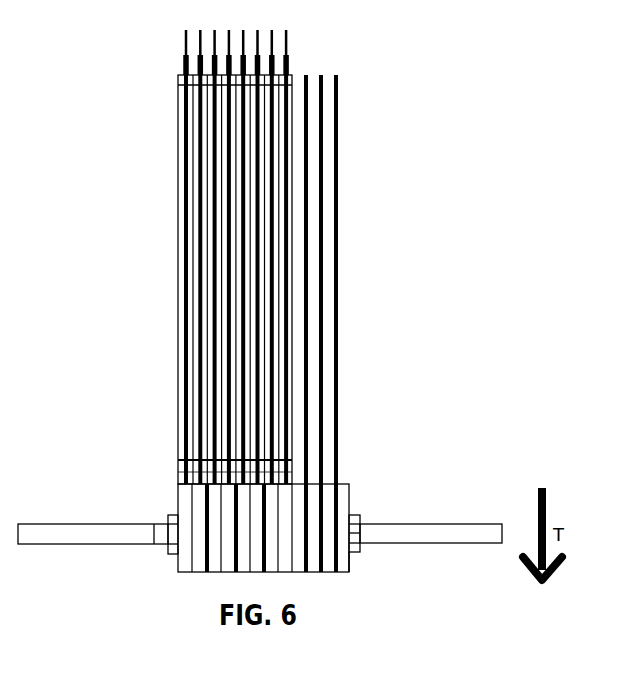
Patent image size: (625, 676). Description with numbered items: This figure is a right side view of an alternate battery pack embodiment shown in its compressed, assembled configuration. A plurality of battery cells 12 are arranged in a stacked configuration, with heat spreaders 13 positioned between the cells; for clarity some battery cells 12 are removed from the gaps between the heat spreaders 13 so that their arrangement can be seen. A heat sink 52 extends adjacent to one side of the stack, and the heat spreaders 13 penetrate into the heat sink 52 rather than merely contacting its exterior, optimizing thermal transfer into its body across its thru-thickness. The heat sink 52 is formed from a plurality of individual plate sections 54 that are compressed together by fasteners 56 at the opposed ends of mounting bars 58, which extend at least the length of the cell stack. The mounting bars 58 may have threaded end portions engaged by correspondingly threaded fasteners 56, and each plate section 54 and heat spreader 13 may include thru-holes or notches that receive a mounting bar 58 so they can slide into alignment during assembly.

The battery cells 12 is at (227, 278).
The heat spreaders 13 is at (190, 450).
The heat sink 52 is at (188, 581).
The plate sections 54 is at (345, 552).
The fasteners 56 is at (175, 517).
The mounting bars 58 is at (72, 535).